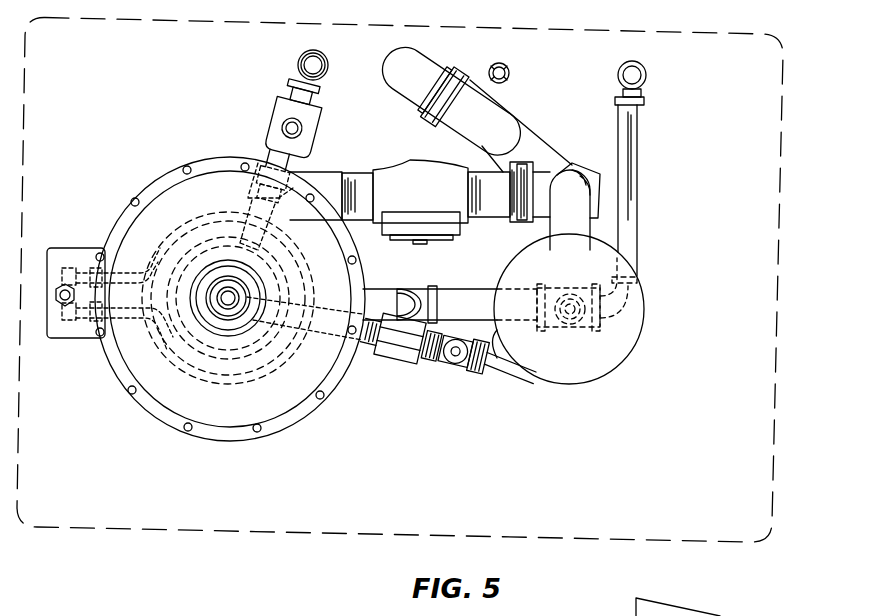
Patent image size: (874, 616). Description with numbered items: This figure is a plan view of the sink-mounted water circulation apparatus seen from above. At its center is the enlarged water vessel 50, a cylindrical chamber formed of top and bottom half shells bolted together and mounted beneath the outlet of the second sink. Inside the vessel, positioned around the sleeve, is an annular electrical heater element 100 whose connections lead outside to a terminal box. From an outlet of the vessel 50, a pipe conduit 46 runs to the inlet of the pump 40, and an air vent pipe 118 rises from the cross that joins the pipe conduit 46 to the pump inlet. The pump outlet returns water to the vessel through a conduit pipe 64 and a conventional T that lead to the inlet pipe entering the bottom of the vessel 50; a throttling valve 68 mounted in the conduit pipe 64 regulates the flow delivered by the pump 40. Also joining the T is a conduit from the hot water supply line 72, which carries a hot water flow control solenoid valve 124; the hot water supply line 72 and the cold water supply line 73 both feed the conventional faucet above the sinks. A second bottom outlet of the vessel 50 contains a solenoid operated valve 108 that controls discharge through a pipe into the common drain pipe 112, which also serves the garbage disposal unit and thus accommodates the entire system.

The pump 40 is at (632, 341).
The pipe conduit 46 is at (398, 300).
The water vessel 50 is at (216, 180).
The conduit pipe 64 is at (365, 348).
The throttling valve 68 is at (455, 358).
The hot water supply line 72 is at (326, 59).
The cold water supply line 73 is at (507, 70).
The annular electrical heater element 100 is at (180, 370).
The solenoid operated valve 108 is at (443, 160).
The common drain pipe 112 is at (495, 122).
The air vent pipe 118 is at (647, 75).
The hot water flow control solenoid valve 124 is at (312, 122).